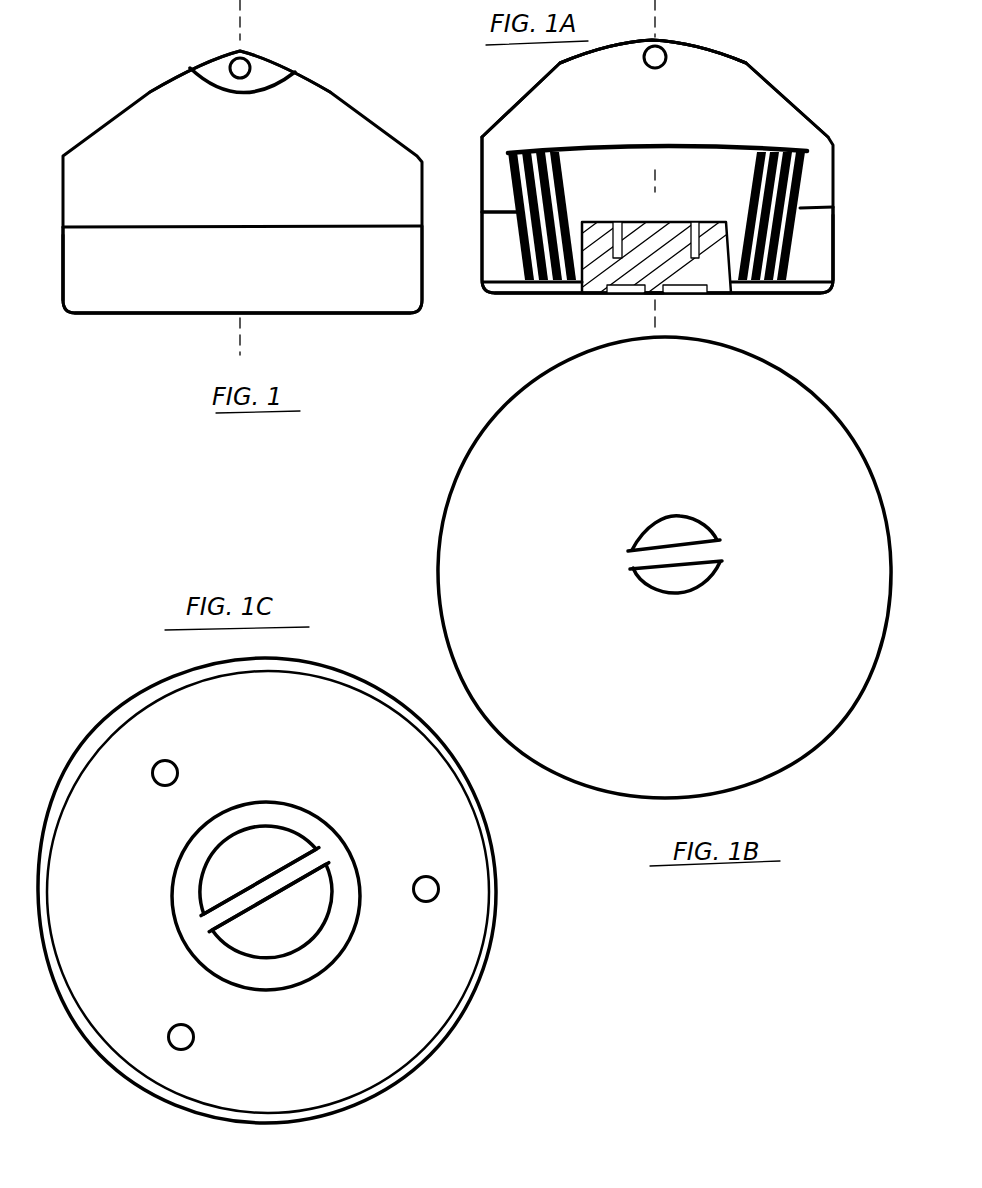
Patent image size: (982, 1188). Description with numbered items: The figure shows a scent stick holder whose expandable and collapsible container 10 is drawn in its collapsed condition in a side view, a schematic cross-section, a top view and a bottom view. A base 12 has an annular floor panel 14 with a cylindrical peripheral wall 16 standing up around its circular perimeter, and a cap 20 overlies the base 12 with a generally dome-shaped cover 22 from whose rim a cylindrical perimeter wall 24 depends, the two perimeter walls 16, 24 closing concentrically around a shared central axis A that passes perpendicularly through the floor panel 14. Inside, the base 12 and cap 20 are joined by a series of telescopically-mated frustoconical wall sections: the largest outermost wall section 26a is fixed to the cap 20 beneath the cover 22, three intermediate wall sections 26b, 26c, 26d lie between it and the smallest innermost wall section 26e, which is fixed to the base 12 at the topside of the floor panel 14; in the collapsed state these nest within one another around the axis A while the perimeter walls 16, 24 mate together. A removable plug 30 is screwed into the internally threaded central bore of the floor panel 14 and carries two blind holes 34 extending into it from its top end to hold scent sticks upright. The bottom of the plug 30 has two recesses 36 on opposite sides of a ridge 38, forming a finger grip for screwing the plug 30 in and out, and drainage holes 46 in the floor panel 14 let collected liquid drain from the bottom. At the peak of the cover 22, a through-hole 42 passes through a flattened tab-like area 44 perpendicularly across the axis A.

In FIG. 1A, the container 10 is at (801, 64).
In FIG. 1, the base 12 is at (343, 299).
In FIG. 1A, the base 12 is at (849, 229).
In FIG. 1, the floor panel 14 is at (310, 318).
In FIG. 1A, the floor panel 14 is at (778, 296).
In FIG. 1, the peripheral wall 16 is at (148, 292).
In FIG. 1A, the peripheral wall 16 is at (834, 246).
In FIG. 1, the cap 20 is at (382, 135).
In FIG. 1A, the cap 20 is at (509, 93).
In FIG. 1, the cover 22 is at (330, 102).
In FIG. 1A, the cover 22 is at (554, 76).
In FIG. 1, the perimeter wall 24 is at (407, 198).
In FIG. 1A, the perimeter wall 24 is at (476, 174).
In FIG. 1A, the largest outermost frustoconical wall section 26a is at (807, 148).
In FIG. 1A, the intermediate frustoconical wall section 26b is at (795, 148).
In FIG. 1A, the intermediate frustoconical wall section 26c is at (782, 148).
In FIG. 1A, the intermediate frustoconical wall section 26d is at (774, 148).
In FIG. 1A, the smallest innermost frustoconical wall section 26e is at (755, 148).
In FIG. 1A, the plug 30 is at (599, 286).
In FIG. 1C, the plug 30 is at (286, 807).
In FIG. 1A, the blind holes 34 is at (618, 222).
In FIG. 1A, the recesses 36 is at (632, 293).
In FIG. 1C, the recesses 36 is at (287, 847).
In FIG. 1A, the ridge 38 is at (653, 295).
In FIG. 1C, the ridge 38 is at (277, 897).
In FIG. 1, the through-hole 42 is at (228, 64).
In FIG. 1A, the through-hole 42 is at (666, 57).
In FIG. 1, the flattened tab-like area 44 is at (266, 72).
In FIG. 1B, the flattened tab-like area 44 is at (678, 557).
In FIG. 1C, the drainage holes 46 is at (180, 778).
In FIG. 1, the central axis A is at (246, 26).
In FIG. 1A, the central axis A is at (661, 28).